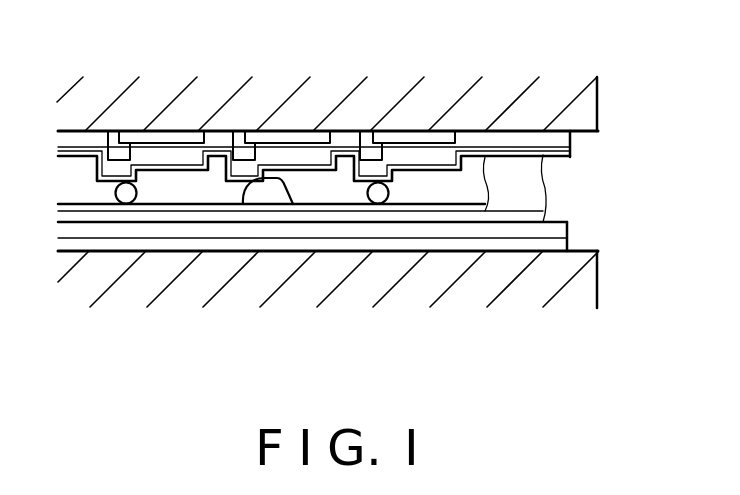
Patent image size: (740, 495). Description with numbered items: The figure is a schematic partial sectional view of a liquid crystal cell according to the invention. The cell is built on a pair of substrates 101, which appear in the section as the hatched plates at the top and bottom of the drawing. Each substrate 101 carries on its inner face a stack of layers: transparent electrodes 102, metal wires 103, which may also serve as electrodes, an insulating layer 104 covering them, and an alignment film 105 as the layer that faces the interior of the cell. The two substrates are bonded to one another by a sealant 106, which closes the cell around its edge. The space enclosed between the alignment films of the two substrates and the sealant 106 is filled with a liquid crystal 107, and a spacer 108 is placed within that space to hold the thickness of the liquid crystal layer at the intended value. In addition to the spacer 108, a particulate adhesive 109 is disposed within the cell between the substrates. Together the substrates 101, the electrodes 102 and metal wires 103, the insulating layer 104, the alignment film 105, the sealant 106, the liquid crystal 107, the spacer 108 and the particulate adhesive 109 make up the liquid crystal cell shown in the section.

The substrate 101 is at (582, 108).
The transparent electrode 102 is at (412, 138).
The metal wire 103 is at (362, 152).
The insulating layer 104 is at (560, 141).
The alignment film 105 is at (560, 153).
The sealant 106 is at (540, 173).
The liquid crystal 107 is at (466, 189).
The spacer 108 is at (380, 197).
The particulate adhesive 109 is at (273, 195).